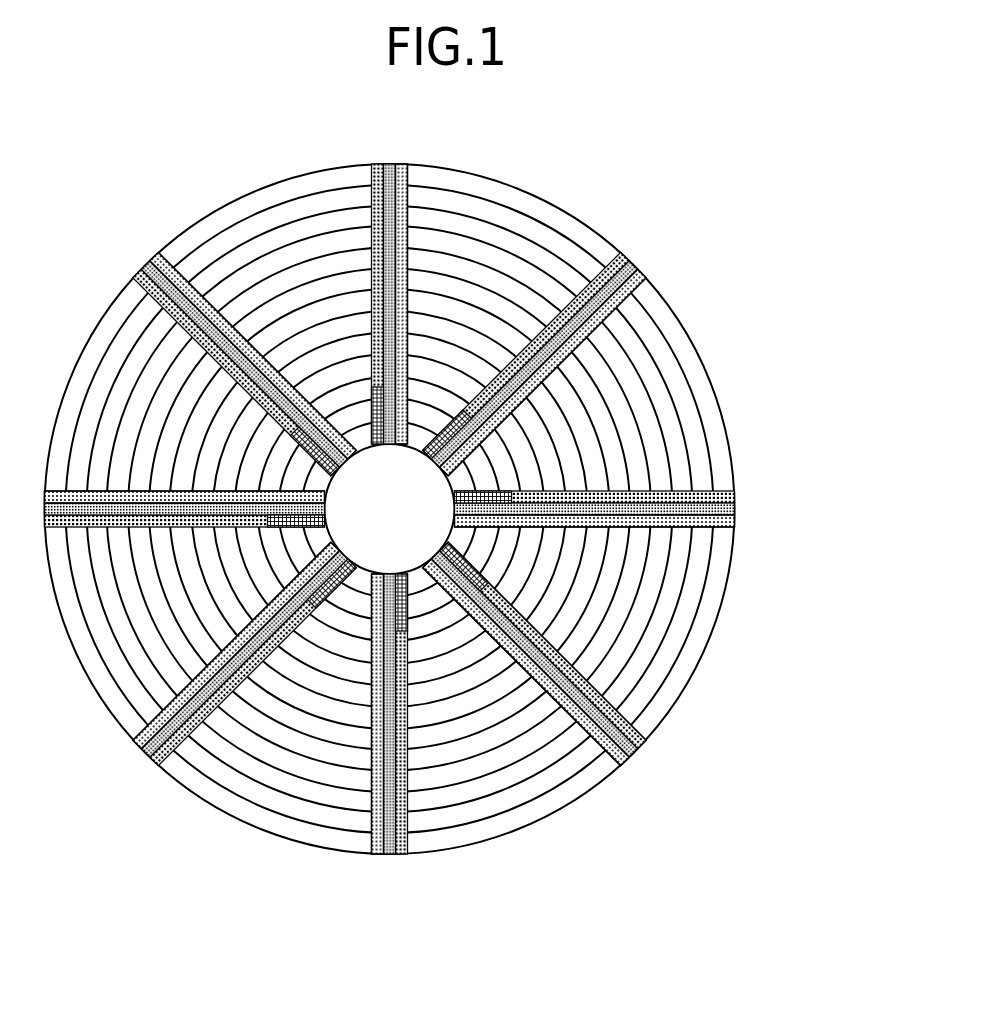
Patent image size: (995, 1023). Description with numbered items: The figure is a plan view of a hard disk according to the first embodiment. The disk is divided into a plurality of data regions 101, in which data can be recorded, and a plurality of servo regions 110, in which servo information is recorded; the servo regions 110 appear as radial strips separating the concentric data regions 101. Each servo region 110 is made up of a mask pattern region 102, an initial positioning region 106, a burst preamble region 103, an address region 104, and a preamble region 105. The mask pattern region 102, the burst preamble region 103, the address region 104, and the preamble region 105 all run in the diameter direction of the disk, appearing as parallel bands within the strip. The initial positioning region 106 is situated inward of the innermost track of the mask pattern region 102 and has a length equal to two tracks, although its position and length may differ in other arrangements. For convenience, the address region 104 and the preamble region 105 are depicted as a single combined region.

The data region 101 is at (651, 243).
The mask pattern region 102 is at (736, 495).
The burst preamble region 103 is at (736, 506).
The address region 104 is at (736, 518).
The preamble region 105 is at (792, 546).
The initial positioning region 106 is at (474, 492).
The servo region 110 is at (642, 749).